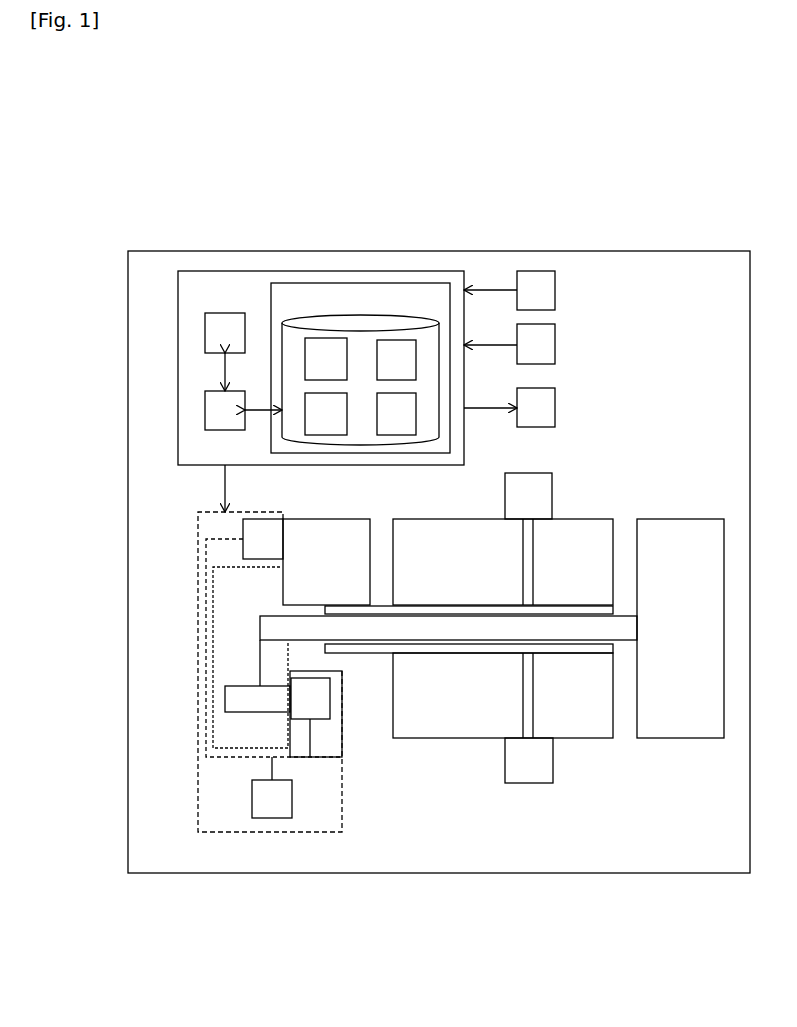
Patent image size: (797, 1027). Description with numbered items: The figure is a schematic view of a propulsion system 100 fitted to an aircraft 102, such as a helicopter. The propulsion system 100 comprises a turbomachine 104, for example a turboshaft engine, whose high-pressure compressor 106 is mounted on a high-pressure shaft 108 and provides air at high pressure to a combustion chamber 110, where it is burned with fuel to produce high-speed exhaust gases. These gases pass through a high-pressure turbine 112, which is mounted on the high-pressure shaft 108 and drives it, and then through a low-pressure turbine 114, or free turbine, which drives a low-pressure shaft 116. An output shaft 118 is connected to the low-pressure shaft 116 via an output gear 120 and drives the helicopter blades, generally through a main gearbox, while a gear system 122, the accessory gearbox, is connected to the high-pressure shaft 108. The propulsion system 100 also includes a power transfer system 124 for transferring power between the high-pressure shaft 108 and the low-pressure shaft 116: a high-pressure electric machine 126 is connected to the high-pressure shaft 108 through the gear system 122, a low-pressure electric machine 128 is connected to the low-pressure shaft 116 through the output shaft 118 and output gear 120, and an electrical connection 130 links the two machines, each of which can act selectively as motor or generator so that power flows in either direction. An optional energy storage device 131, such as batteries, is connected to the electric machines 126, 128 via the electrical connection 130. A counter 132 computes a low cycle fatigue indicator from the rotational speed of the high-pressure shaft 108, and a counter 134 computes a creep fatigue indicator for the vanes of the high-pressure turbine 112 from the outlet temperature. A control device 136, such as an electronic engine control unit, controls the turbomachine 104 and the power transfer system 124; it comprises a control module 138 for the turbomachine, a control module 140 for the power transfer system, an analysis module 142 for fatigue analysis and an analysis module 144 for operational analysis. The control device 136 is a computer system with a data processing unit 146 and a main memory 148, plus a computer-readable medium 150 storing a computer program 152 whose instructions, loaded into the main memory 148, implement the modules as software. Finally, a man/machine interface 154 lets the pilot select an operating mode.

The propulsion system 100 is at (675, 378).
The aircraft 102 is at (697, 251).
The turbomachine 104 is at (612, 463).
The high-pressure compressor 106 is at (430, 662).
The high-pressure shaft 108 is at (348, 612).
The combustion chamber 110 is at (513, 743).
The high-pressure turbine 112 is at (588, 670).
The low-pressure turbine 114 is at (667, 640).
The low-pressure shaft 116 is at (267, 627).
The output shaft 118 is at (258, 712).
The output gear 120 is at (262, 677).
The gear system 122 is at (312, 573).
The power transfer system 124 is at (198, 552).
The high-pressure electric machine 126 is at (250, 547).
The low-pressure electric machine 128 is at (297, 706).
The electrical connection 130 is at (312, 757).
The energy storage device 131 is at (259, 807).
The counter 132 is at (523, 299).
The counter 134 is at (523, 353).
The control device 136 is at (178, 408).
The control module 138 is at (313, 367).
The control module 140 is at (383, 368).
The analysis module 142 is at (313, 422).
The analysis module 144 is at (383, 422).
The data processing unit 146 is at (212, 341).
The main memory 148 is at (212, 418).
The computer-readable medium 150 is at (277, 309).
The computer program 152 is at (404, 315).
The man/machine interface 154 is at (523, 416).